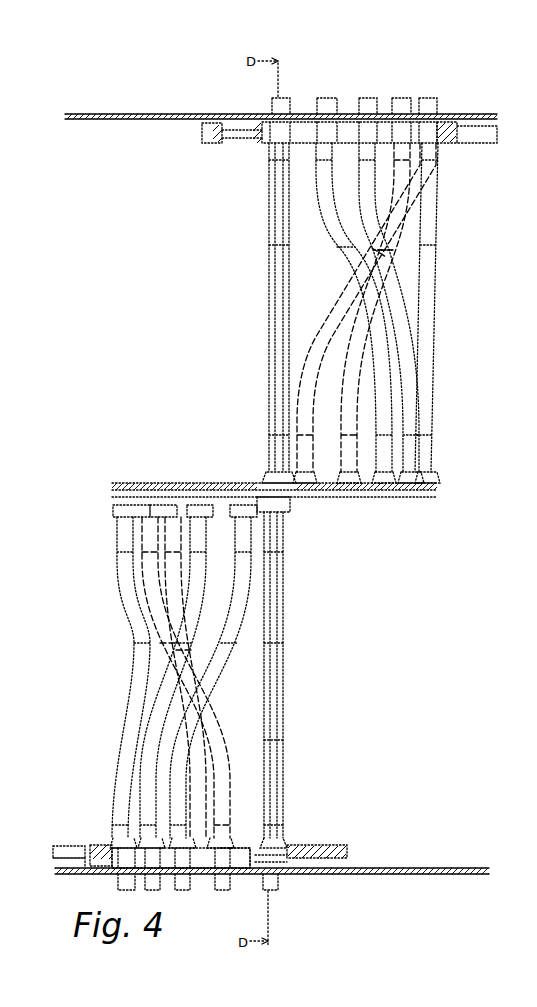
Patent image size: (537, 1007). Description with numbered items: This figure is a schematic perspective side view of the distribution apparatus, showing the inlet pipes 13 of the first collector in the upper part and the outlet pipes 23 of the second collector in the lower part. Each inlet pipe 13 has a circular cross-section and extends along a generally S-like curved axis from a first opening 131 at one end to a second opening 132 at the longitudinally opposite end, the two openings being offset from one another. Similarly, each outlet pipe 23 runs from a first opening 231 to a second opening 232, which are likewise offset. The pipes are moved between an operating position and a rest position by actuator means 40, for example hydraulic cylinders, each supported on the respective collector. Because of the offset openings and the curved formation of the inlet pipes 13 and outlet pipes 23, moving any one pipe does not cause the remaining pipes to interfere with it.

The inlet pipe 13 is at (285, 376).
The first opening 131 is at (402, 99).
The second opening 132 is at (345, 484).
The outlet pipe 23 is at (173, 692).
The first opening 231 is at (237, 504).
The second opening 232 is at (232, 880).
The actuator means 40 is at (231, 145).